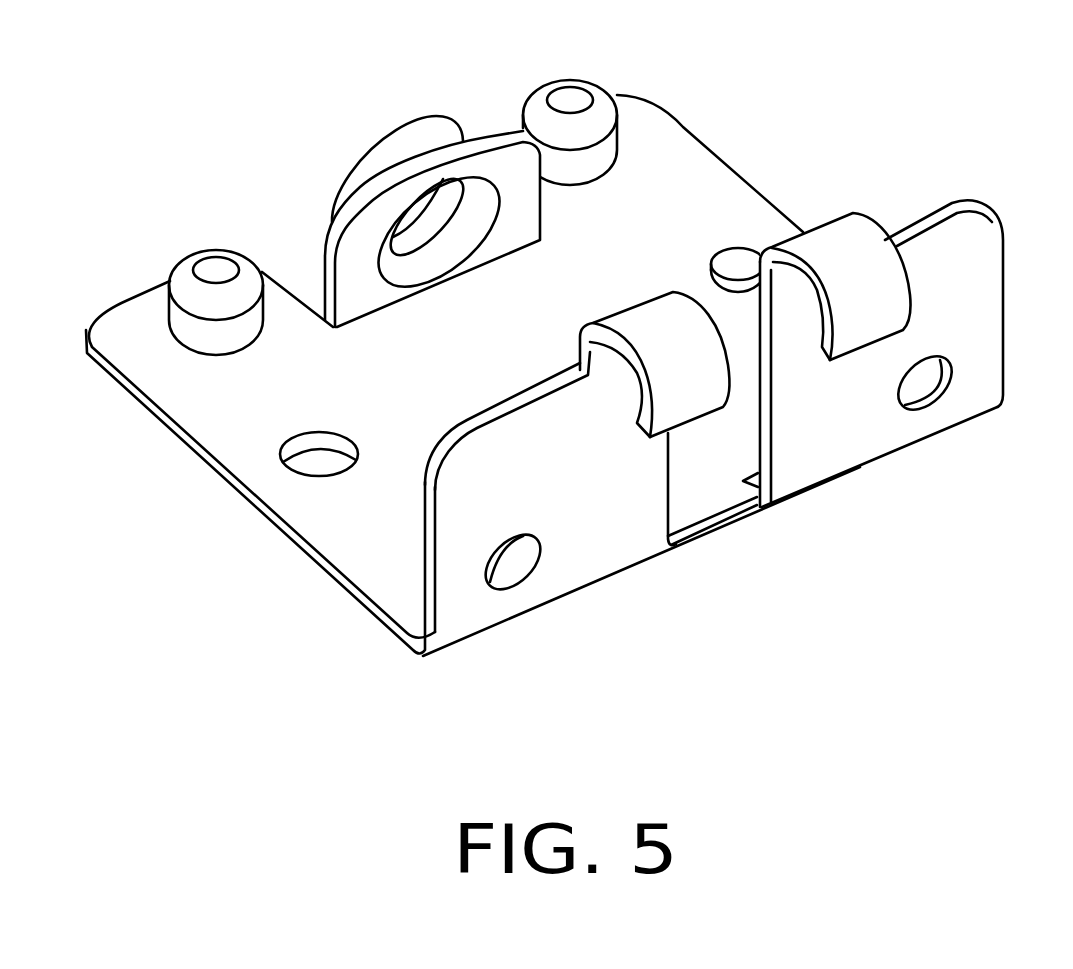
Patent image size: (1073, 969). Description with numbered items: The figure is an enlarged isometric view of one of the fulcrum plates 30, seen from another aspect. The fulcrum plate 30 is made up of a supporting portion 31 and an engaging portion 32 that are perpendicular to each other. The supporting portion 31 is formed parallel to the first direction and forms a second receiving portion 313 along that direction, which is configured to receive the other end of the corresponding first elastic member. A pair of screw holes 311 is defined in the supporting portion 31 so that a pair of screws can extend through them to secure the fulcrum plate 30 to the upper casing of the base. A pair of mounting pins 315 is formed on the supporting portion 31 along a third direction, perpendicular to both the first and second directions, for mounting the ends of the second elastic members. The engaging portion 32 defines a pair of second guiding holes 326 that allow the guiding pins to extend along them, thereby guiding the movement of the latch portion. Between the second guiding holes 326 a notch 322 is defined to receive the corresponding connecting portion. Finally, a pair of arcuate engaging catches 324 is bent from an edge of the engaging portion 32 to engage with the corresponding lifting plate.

The fulcrum plate 30 is at (717, 118).
The supporting portion 31 is at (343, 518).
The screw hole 311 is at (315, 457).
The second receiving portion 313 is at (410, 150).
The mounting pin 315 is at (190, 297).
The engaging portion 32 is at (618, 543).
The notch 322 is at (693, 447).
The arcuate engaging catch 324 is at (845, 262).
The second guiding hole 326 is at (510, 560).